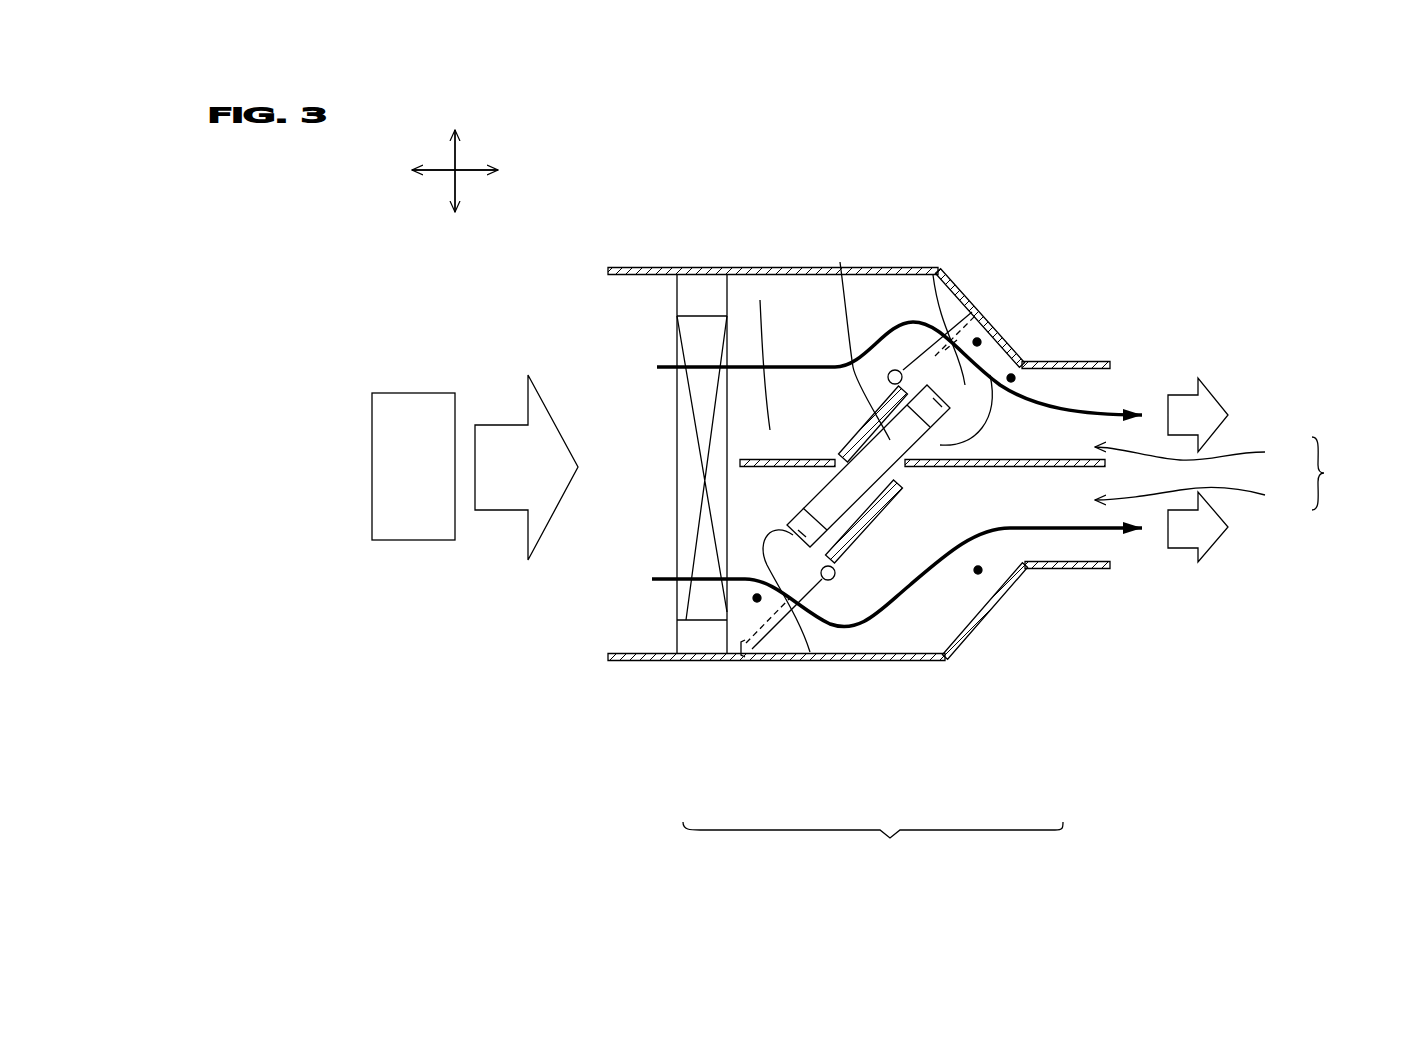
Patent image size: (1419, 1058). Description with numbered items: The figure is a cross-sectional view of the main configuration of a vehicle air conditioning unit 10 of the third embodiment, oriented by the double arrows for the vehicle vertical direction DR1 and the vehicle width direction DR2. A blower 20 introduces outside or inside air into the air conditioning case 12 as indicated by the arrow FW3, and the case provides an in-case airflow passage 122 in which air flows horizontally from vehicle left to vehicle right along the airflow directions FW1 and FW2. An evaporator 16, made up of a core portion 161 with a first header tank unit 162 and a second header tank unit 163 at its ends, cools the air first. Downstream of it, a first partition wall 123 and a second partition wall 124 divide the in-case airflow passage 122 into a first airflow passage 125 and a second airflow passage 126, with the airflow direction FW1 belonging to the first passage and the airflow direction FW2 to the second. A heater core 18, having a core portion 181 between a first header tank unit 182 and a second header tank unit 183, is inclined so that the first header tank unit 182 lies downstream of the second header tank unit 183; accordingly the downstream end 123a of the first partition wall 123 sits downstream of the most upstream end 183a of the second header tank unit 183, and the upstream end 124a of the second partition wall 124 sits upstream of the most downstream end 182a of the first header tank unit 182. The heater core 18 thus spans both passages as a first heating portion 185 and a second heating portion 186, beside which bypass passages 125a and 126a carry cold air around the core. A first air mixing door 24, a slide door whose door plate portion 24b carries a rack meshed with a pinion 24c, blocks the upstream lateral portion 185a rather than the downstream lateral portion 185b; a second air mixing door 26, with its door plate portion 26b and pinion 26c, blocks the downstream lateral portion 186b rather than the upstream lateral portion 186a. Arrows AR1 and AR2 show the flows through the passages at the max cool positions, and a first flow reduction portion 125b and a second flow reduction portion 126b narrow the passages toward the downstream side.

The vehicle air conditioning unit 10 is at (1172, 236).
The air conditioning case 12 is at (872, 268).
The evaporator 16 is at (676, 401).
The core portion 161 is at (682, 438).
The first header tank unit 162 is at (692, 295).
The second header tank unit 163 is at (690, 638).
The heater core 18 is at (873, 622).
The core portion 181 is at (795, 508).
The first header tank unit 182 is at (957, 272).
The most downstream end 182a is at (952, 335).
The second header tank unit 183 is at (820, 583).
The most upstream end 183a is at (792, 555).
The first heating portion 185 is at (960, 645).
The upstream lateral portion 185a is at (890, 358).
The downstream lateral portion 185b is at (1005, 365).
The second heating portion 186 is at (738, 575).
The upstream lateral portion 186a is at (798, 497).
The downstream lateral portion 186b is at (907, 470).
The blower 20 is at (424, 400).
The first air mixing door 24 is at (938, 275).
The door plate portion 24b is at (853, 336).
The pinion 24c is at (905, 363).
The second air mixing door 26 is at (883, 522).
The door plate portion 26b is at (924, 445).
The pinion 26c is at (838, 576).
The in-case airflow passage 122 is at (1335, 473).
The first partition wall 123 is at (775, 460).
The downstream end 123a is at (838, 450).
The second partition wall 124 is at (1073, 470).
The upstream end 124a is at (857, 437).
The first airflow passage 125 is at (1200, 453).
The bypass passage 125a is at (978, 341).
The first flow reduction portion 125b is at (1013, 378).
The second airflow passage 126 is at (1200, 493).
The bypass passage 126a is at (757, 600).
The second flow reduction portion 126b is at (979, 572).
The air flow arrow AR1 is at (1107, 413).
The air flow arrow AR2 is at (1105, 530).
The airflow direction FW1 is at (1180, 394).
The airflow direction FW2 is at (1180, 549).
The blower airflow arrow FW3 is at (495, 512).
The vehicle vertical direction DR1 is at (457, 157).
The vehicle width direction DR2 is at (465, 178).